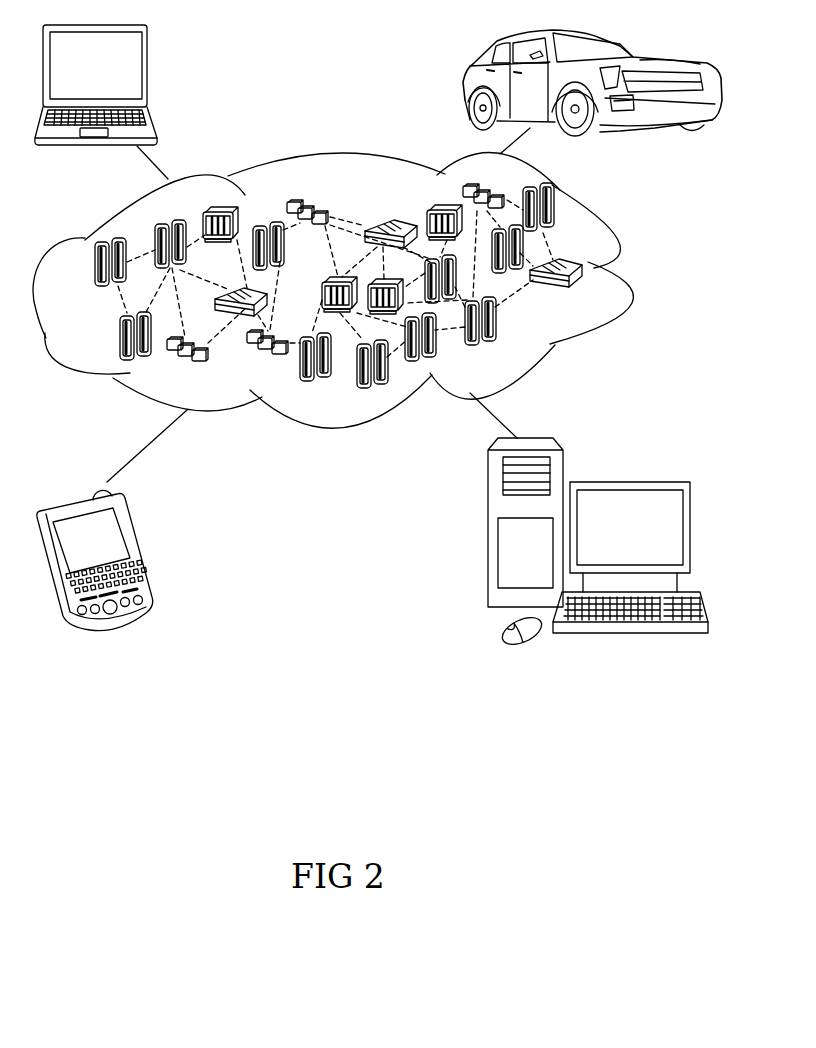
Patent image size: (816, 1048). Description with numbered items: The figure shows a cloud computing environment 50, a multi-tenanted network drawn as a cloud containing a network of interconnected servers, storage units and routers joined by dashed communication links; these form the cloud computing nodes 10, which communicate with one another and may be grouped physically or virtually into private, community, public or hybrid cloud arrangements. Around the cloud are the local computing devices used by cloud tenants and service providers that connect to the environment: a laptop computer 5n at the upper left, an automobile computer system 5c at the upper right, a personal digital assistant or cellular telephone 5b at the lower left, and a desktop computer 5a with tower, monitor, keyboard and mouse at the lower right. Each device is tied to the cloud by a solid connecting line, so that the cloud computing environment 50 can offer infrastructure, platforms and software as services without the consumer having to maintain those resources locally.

The laptop computer 5n is at (145, 73).
The automobile computer system 5c is at (470, 83).
The personal digital assistant (PDA) or cellular telephone 5b is at (140, 547).
The desktop computer 5a is at (628, 481).
The cloud computing environment 50 is at (627, 270).
The cloud computing nodes 10 is at (592, 295).